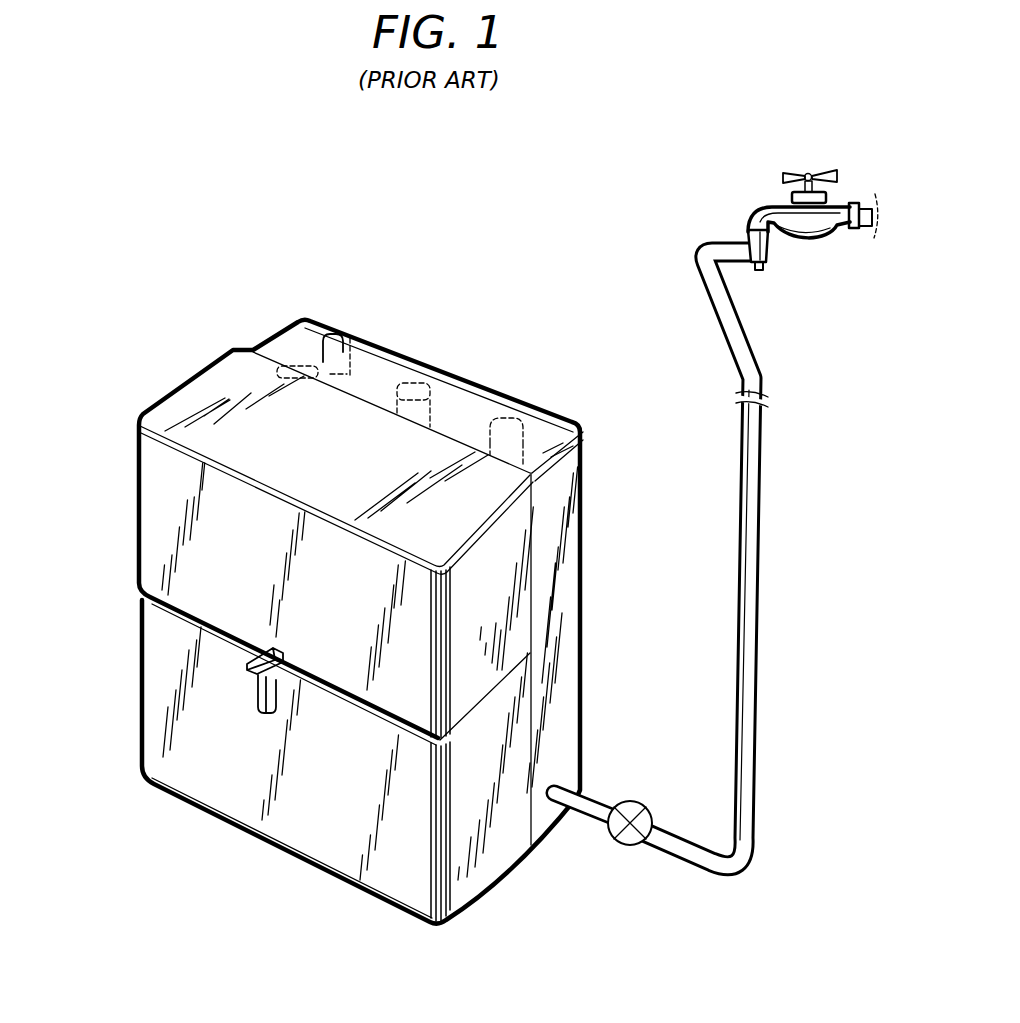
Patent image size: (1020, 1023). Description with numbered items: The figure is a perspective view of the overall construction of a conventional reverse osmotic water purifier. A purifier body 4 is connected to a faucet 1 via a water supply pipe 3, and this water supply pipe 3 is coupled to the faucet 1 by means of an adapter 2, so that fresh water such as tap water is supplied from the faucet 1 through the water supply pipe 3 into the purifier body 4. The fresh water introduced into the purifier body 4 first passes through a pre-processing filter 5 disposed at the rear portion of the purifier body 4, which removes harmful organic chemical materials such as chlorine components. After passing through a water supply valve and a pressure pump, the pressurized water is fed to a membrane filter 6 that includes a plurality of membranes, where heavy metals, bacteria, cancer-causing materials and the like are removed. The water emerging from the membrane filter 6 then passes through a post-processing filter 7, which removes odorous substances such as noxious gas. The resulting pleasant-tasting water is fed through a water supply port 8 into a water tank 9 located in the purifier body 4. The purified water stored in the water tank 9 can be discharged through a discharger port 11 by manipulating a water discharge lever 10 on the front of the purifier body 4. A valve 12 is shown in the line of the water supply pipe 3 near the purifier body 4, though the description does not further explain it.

The faucet 1 is at (772, 207).
The adapter 2 is at (768, 256).
The water supply pipe 3 is at (750, 522).
The purifier body 4 is at (511, 863).
The pre-processing filter 5 is at (525, 430).
The membrane filter 6 is at (436, 382).
The post-processing filter 7 is at (350, 372).
The water supply port 8 is at (280, 368).
The water tank 9 is at (212, 558).
The water discharge lever 10 is at (259, 686).
The discharger port 11 is at (260, 706).
The valve 12 is at (633, 845).